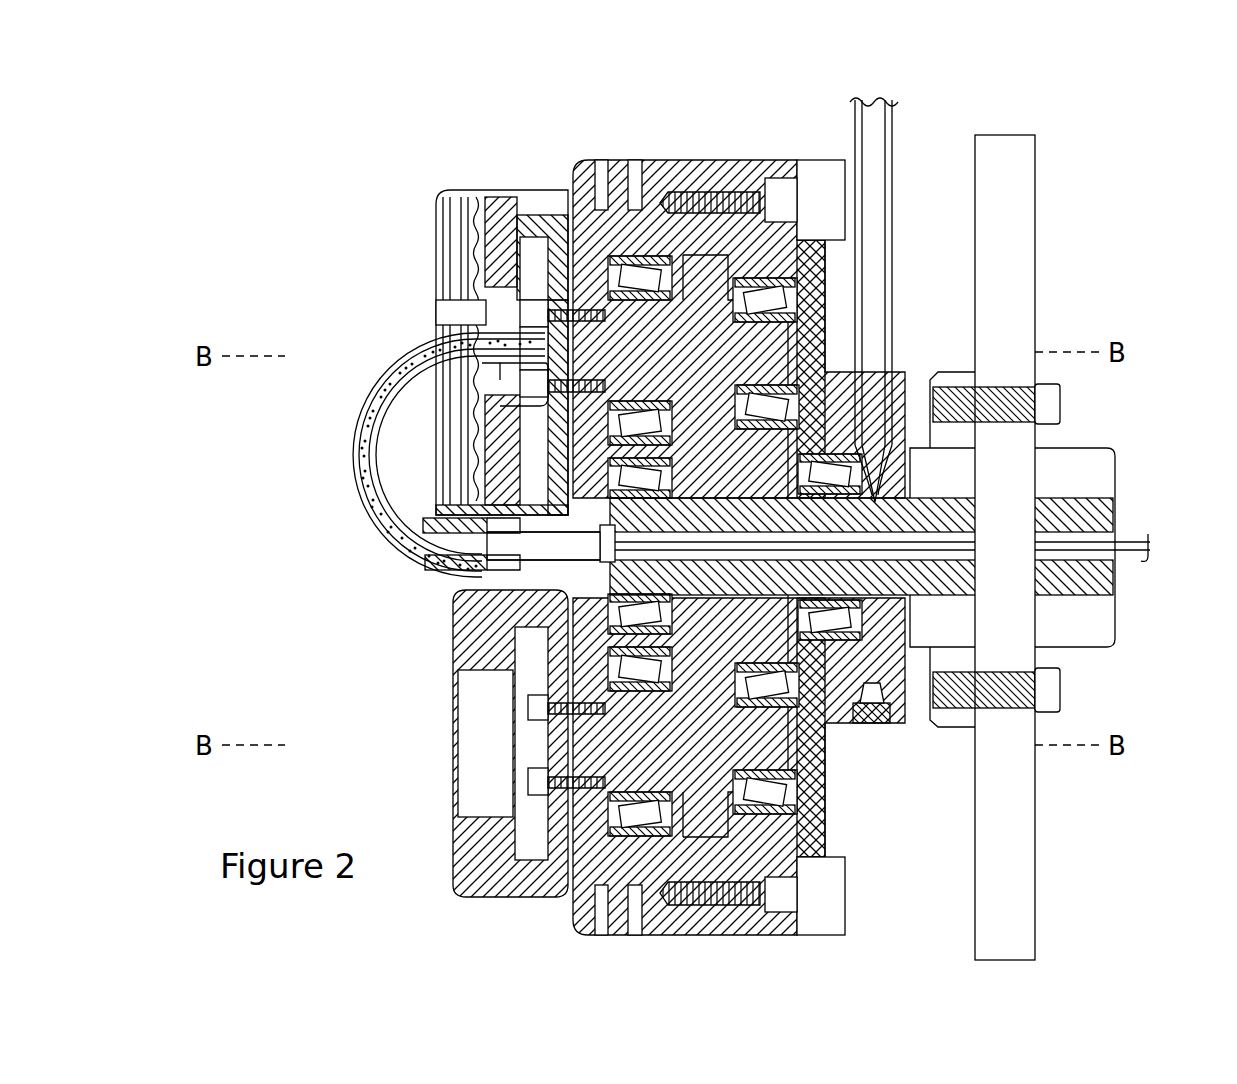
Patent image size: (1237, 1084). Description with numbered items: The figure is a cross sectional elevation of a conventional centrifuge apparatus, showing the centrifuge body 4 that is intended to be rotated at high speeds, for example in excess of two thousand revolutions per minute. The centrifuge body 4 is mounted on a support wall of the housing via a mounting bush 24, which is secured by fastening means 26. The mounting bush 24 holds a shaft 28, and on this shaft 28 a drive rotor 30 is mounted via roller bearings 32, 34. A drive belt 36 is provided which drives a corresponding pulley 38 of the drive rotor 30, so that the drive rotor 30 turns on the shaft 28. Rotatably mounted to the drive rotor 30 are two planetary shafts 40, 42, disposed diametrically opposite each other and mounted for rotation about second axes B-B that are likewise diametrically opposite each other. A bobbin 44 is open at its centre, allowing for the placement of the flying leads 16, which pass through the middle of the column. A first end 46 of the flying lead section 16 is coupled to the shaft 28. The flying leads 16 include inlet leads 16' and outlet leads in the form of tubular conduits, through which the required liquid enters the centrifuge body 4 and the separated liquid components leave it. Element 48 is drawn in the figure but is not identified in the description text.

The centrifuge body 4 is at (601, 124).
The flying leads 16 is at (419, 454).
The inlet leads 16' is at (370, 455).
The mounting bush 24 is at (1105, 650).
The fastening means 26 is at (1052, 690).
The shaft 28 is at (1115, 612).
The drive rotor 30 is at (765, 158).
The roller bearing 32 is at (724, 619).
The roller bearing 34 is at (868, 468).
The drive belt 36 is at (876, 128).
The pulley 38 is at (876, 720).
The planetary shaft 40 is at (712, 360).
The planetary shaft 42 is at (706, 757).
The bobbin 44 is at (455, 188).
The first end 46 is at (410, 352).
The cable guide 48 is at (408, 568).